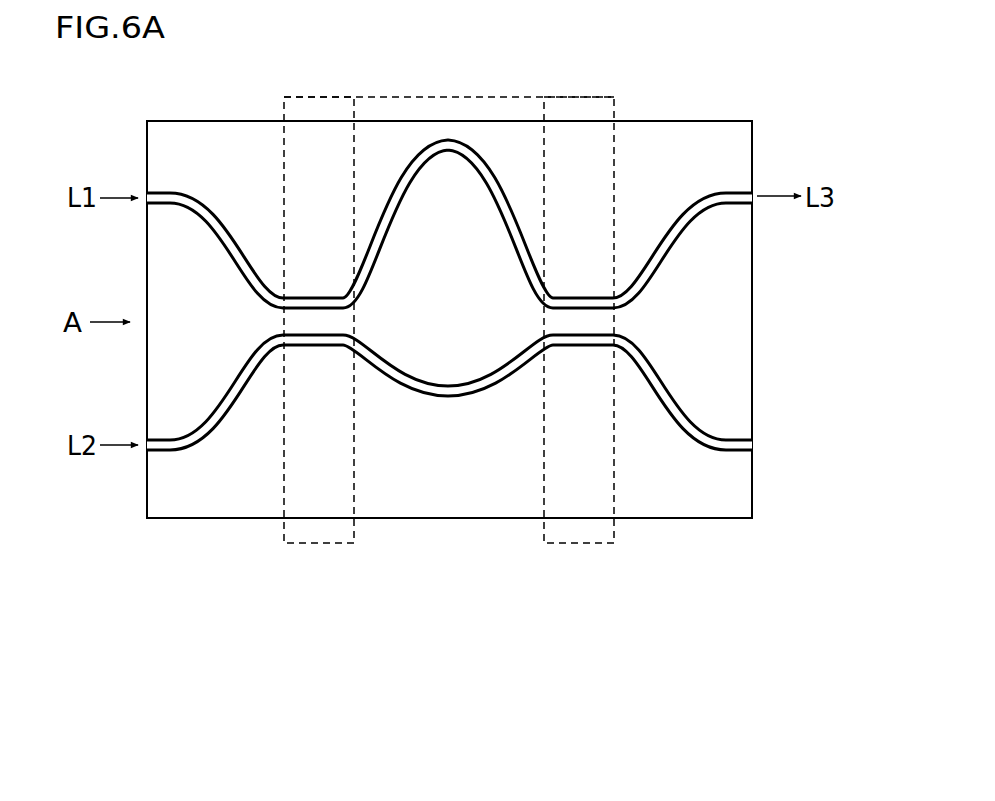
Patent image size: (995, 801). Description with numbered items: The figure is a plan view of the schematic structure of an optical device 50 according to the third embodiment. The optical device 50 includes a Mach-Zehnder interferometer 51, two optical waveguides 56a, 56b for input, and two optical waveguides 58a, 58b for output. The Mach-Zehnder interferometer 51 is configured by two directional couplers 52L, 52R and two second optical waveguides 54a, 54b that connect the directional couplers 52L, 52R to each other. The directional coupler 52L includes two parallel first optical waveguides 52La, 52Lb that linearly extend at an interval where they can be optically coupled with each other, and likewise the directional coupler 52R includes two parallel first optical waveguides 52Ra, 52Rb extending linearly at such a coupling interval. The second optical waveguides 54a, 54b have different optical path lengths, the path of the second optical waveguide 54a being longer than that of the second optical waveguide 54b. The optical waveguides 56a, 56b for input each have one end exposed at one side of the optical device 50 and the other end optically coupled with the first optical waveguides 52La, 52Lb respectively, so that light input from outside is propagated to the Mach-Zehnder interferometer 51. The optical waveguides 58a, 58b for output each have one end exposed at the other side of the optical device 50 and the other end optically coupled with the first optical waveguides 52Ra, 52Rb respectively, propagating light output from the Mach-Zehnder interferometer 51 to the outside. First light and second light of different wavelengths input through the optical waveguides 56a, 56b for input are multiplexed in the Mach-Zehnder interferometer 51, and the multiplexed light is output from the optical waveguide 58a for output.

The optical device 50 is at (737, 648).
The Mach-Zehnder interferometer 51 is at (602, 603).
The directional coupler 52L is at (330, 545).
The directional coupler 52R is at (571, 545).
The first optical waveguide 52La is at (300, 300).
The first optical waveguide 52Lb is at (336, 337).
The first optical waveguide 52Ra is at (596, 297).
The first optical waveguide 52Rb is at (562, 337).
The second optical waveguide 54a is at (382, 229).
The second optical waveguide 54b is at (482, 383).
The optical waveguide for input 56a is at (225, 240).
The optical waveguide for input 56b is at (212, 421).
The optical waveguide for output 58a is at (672, 231).
The optical waveguide for output 58b is at (685, 421).